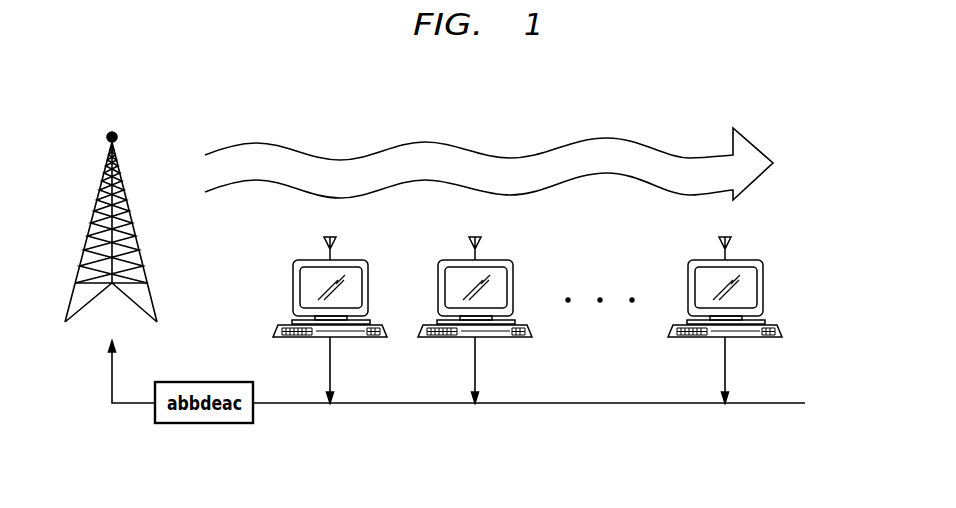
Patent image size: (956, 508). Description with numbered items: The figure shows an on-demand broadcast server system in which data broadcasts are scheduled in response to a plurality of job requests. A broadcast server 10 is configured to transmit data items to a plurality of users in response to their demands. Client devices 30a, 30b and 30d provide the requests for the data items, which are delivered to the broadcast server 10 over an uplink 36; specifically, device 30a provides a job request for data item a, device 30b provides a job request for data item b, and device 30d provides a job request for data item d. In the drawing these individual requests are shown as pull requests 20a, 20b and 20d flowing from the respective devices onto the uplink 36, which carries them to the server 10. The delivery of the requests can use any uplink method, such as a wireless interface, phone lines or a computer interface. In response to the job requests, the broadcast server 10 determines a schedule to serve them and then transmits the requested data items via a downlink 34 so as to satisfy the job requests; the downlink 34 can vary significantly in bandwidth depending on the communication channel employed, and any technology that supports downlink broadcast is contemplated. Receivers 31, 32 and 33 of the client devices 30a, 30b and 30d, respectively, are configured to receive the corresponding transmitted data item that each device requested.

The broadcast server 10 is at (111, 202).
The downlink 34 is at (245, 143).
The uplink 36 is at (633, 404).
The device 30a is at (293, 288).
The device 30b is at (438, 288).
The device 30d is at (765, 292).
The receiver 31 is at (333, 245).
The receiver 32 is at (478, 246).
The receiver 33 is at (728, 247).
The pull request from client 30a 20a is at (331, 373).
The pull request from client 30b 20b is at (476, 373).
The pull request from client 30d 20d is at (726, 374).